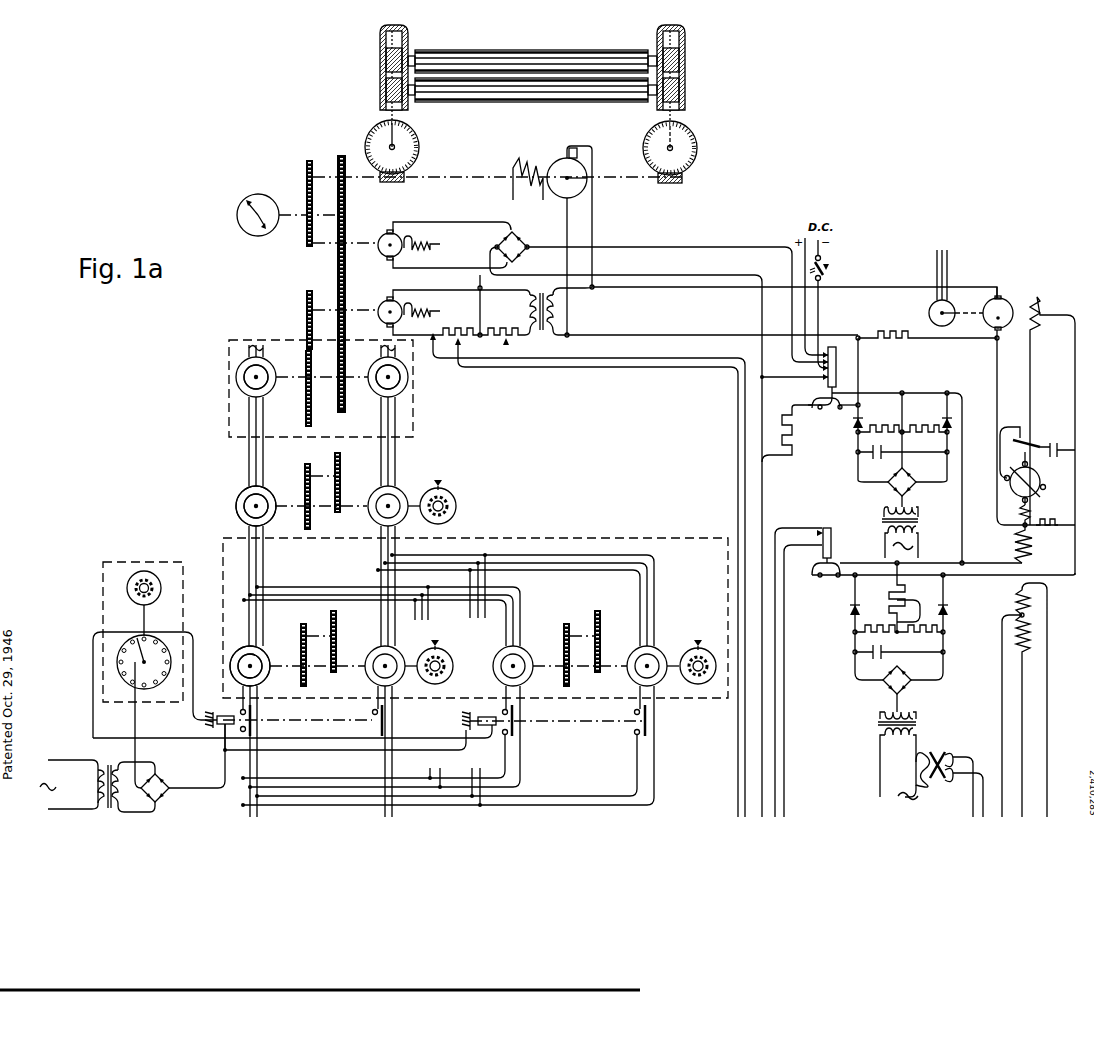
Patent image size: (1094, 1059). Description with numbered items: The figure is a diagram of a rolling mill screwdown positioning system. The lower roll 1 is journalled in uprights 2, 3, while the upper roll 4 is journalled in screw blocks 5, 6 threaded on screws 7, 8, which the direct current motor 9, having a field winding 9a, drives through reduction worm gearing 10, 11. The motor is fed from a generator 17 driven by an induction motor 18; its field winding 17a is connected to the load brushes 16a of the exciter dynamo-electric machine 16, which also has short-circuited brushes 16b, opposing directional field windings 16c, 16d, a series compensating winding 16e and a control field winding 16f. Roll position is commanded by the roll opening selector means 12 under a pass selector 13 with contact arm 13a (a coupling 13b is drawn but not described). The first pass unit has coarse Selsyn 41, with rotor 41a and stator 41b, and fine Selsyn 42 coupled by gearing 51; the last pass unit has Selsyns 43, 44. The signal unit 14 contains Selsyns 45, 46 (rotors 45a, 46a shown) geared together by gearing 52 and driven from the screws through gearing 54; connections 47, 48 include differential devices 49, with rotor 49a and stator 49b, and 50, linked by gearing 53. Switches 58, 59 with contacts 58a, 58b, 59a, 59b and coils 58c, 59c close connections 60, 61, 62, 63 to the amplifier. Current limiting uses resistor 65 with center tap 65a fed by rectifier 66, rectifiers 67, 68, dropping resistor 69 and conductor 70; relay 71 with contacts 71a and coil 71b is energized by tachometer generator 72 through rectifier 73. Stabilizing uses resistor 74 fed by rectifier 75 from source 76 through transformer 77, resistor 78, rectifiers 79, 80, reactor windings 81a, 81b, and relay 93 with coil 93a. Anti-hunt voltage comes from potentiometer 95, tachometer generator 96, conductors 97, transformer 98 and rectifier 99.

The lower roll 1 is at (508, 101).
The upright 2 is at (380, 86).
The upright 3 is at (685, 90).
The upper roll 4 is at (522, 51).
The screw block 5 is at (386, 56).
The screw block 6 is at (680, 52).
The screw 7 is at (390, 112).
The screw 8 is at (668, 112).
The direct current electric motor 9 is at (560, 161).
The field winding 9a is at (523, 165).
The reduction worm gearing 10 is at (408, 174).
The reduction worm gearing 11 is at (650, 170).
The roll opening selector means 12 is at (325, 570).
The pass selector 13 is at (149, 555).
The movable contact arm 13a is at (138, 636).
The coupling 13b is at (140, 575).
The signal unit 14 is at (294, 357).
The exciter dynamo-electric machine 16 is at (1025, 478).
The load circuit brushes 16a is at (1021, 463).
The short-circuited armature brushes 16b is at (1044, 480).
The directional reference field winding 16c is at (1016, 598).
The directional reference field winding 16d is at (1045, 622).
The series compensating field winding 16e is at (1030, 513).
The control field winding 16f is at (1032, 550).
The generator 17 is at (1004, 300).
The field winding 17a is at (1037, 300).
The induction motor 18 is at (930, 307).
The rotary induction device 41 is at (240, 650).
The rotor member 41a is at (260, 660).
The stator member 41b is at (262, 650).
The rotary induction device 42 is at (371, 652).
The induction device 43 is at (502, 652).
The induction device 44 is at (637, 651).
The Selsyn 45 is at (249, 362).
The rotor 45a is at (265, 387).
The Selsyn 46 is at (373, 390).
The rotor 46a is at (378, 367).
The electrical connections 47 is at (249, 530).
The electrical connections 48 is at (395, 523).
The differential electrical device 49 is at (244, 490).
The rotor member 49a is at (244, 508).
The stator member 49b is at (238, 500).
The differential electrical device 50 is at (398, 492).
The gearing 51 is at (326, 618).
The gearing 52 is at (334, 367).
The gearing 53 is at (330, 457).
The gearing 54 is at (338, 203).
The electromagnetic switch 58 is at (298, 720).
The contact 58a is at (240, 712).
The contact 58b is at (373, 711).
The operating coil 58c is at (212, 712).
The electromagnetic switch 59 is at (583, 720).
The contact 59a is at (502, 711).
The contact 59b is at (635, 711).
The operating coil 59c is at (462, 714).
The connection 60 is at (243, 805).
The connection 61 is at (385, 806).
The connection 62 is at (507, 748).
The connection 63 is at (637, 748).
The resistor 65 is at (877, 428).
The center tap 65a is at (884, 452).
The rectifier 66 is at (902, 513).
The rectifier 67 is at (855, 420).
The rectifier 68 is at (947, 418).
The voltage dropping resistor 69 is at (888, 331).
The conductor 70 is at (997, 374).
The relay 71 is at (836, 378).
The contacts 71a is at (812, 407).
The operating coil 71b is at (820, 377).
The tachometer generator 72 is at (384, 236).
The full wave rectifier 73 is at (659, 524).
The center tap resistor 74 is at (870, 627).
The full wave rectifier 75 is at (897, 689).
The alternating voltage source 76 is at (904, 800).
The transformer 77 is at (918, 723).
The voltage dropping resistor 78 is at (1052, 527).
The half wave rectifier 79 is at (850, 611).
The half wave rectifier 80 is at (948, 610).
The reactance winding 81a is at (926, 760).
The saturating winding 81b is at (960, 780).
The relay 93 is at (831, 545).
The operating coil 93a is at (828, 532).
The potentiometer 95 is at (466, 326).
The tachometer generator 96 is at (383, 304).
The conductors 97 is at (612, 356).
The transformer 98 is at (540, 332).
The rectifier 99 is at (587, 575).